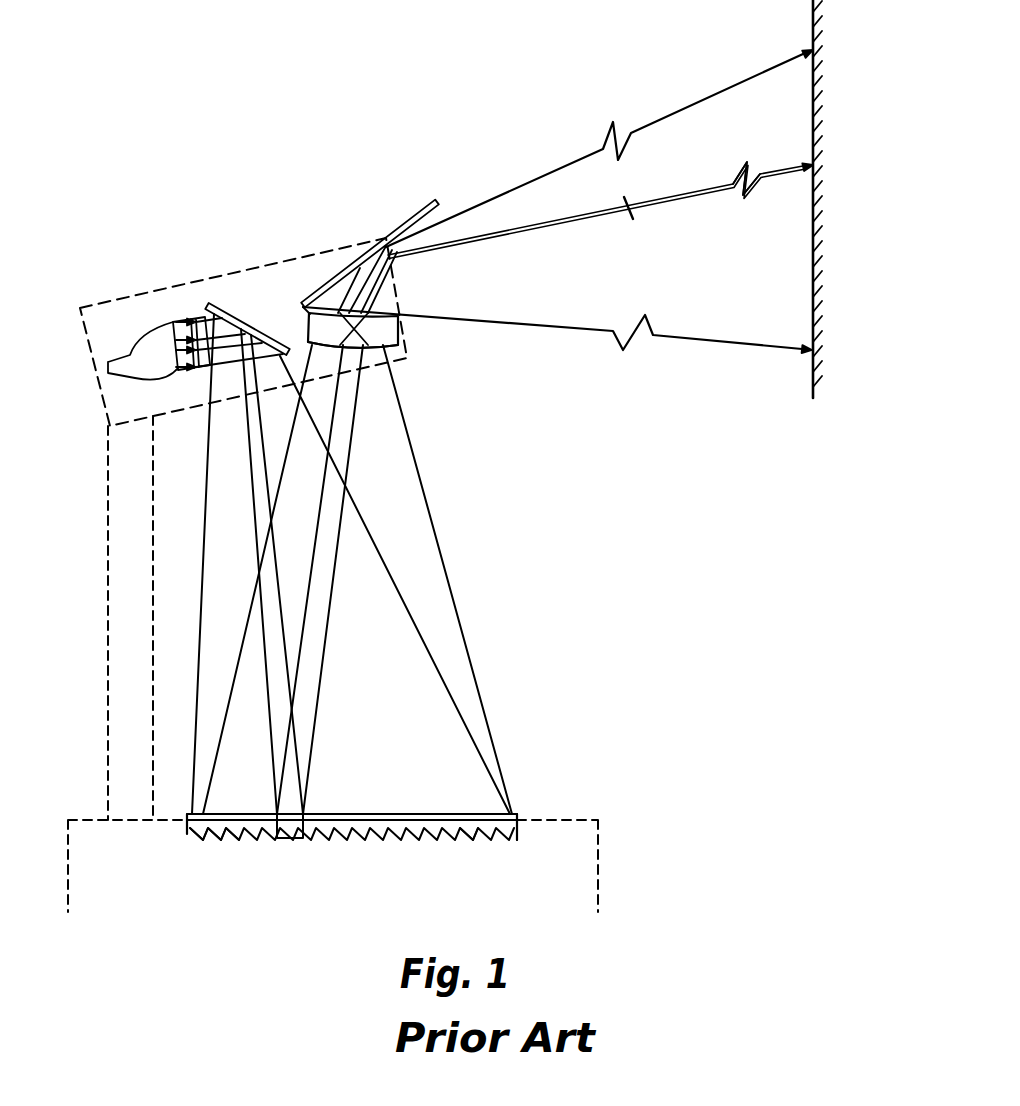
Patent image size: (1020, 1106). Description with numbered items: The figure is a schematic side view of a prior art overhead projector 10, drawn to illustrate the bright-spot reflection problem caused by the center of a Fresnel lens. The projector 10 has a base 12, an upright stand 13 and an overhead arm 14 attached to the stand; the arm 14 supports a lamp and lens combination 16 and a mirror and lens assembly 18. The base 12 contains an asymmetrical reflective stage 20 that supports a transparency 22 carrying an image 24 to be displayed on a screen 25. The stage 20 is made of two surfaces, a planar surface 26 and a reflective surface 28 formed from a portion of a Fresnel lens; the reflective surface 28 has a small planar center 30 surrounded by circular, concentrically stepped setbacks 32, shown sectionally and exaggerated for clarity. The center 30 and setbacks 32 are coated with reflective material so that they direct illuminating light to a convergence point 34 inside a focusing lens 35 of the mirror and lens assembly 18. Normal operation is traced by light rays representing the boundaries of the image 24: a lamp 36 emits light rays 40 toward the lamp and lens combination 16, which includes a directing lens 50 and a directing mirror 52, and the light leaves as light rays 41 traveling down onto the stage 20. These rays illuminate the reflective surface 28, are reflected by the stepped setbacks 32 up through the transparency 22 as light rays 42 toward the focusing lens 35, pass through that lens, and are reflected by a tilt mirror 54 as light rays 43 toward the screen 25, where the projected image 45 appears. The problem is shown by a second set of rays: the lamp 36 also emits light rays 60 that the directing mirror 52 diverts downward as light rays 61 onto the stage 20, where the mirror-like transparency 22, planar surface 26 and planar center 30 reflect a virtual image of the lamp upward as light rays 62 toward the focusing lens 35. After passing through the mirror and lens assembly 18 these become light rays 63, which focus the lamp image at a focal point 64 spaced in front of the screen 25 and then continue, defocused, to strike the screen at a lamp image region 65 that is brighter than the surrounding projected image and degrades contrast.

The overhead projector 10 is at (96, 537).
The base 12 is at (66, 842).
The upright stand 13 is at (97, 665).
The overhead arm 14 is at (287, 248).
The lamp and lens combination 16 is at (190, 282).
The mirror and lens assembly 18 is at (348, 252).
The reflective stage 20 is at (536, 829).
The transparency 22 is at (360, 816).
The image 24 is at (325, 801).
The screen 25 is at (813, 72).
The planar surface 26 is at (478, 820).
The reflective surface 28 is at (477, 853).
The planar center 30 is at (290, 840).
The stepped setbacks 32 is at (232, 838).
The convergence point 34 is at (382, 327).
The focusing lens 35 is at (386, 347).
The lamp 36 is at (128, 354).
The light rays 40 is at (206, 370).
The light rays 41 is at (357, 520).
The light rays 42 is at (466, 651).
The light rays 43 is at (668, 117).
The projected image 45 is at (803, 97).
The directing lens 50 is at (193, 316).
The directing mirror 52 is at (227, 304).
The tilt mirror 54 is at (440, 205).
The light rays 60 is at (172, 347).
The light rays 61 is at (258, 478).
The light rays 62 is at (296, 673).
The light rays 63 is at (438, 255).
The focal point 64 is at (626, 213).
The lamp image region 65 is at (801, 173).